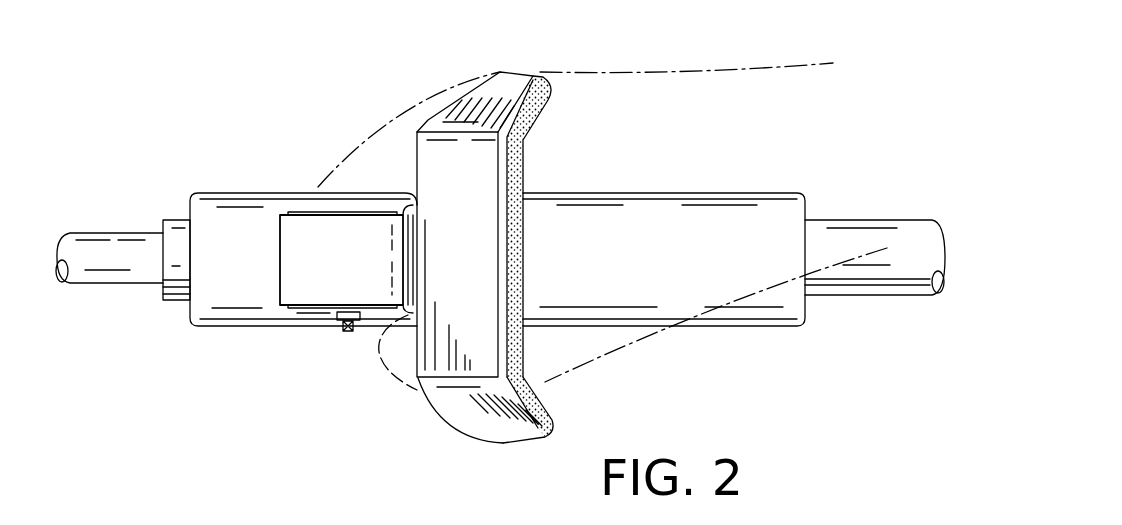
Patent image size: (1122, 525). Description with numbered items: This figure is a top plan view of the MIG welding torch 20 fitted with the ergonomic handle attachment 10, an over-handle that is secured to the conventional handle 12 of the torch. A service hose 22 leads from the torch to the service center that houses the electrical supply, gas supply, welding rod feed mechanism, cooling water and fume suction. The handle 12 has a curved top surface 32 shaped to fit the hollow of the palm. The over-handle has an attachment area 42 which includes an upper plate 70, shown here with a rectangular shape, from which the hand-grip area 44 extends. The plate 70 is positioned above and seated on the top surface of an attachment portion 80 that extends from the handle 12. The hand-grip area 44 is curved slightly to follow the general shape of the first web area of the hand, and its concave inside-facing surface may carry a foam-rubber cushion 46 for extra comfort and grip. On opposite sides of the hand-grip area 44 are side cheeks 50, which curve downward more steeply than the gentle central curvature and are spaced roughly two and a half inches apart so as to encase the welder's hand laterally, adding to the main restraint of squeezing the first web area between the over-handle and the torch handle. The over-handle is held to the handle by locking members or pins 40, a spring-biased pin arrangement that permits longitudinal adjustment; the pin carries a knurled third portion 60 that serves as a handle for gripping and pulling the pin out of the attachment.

The ergonomic handle attachment 10 is at (428, 407).
The handle 12 is at (643, 328).
The MIG welding torch 20 is at (143, 170).
The service hose 22 is at (877, 235).
The curved top surface 32 is at (682, 244).
The locking members or pins 40 is at (343, 334).
The attachment area 42 is at (312, 230).
The hand-grip area 44 is at (430, 153).
The foam-rubber cushion 46 is at (533, 118).
The side cheeks 50 is at (483, 100).
The third portion 60 is at (355, 332).
The upper plate 70 is at (302, 307).
The attachment portion 80 is at (316, 312).